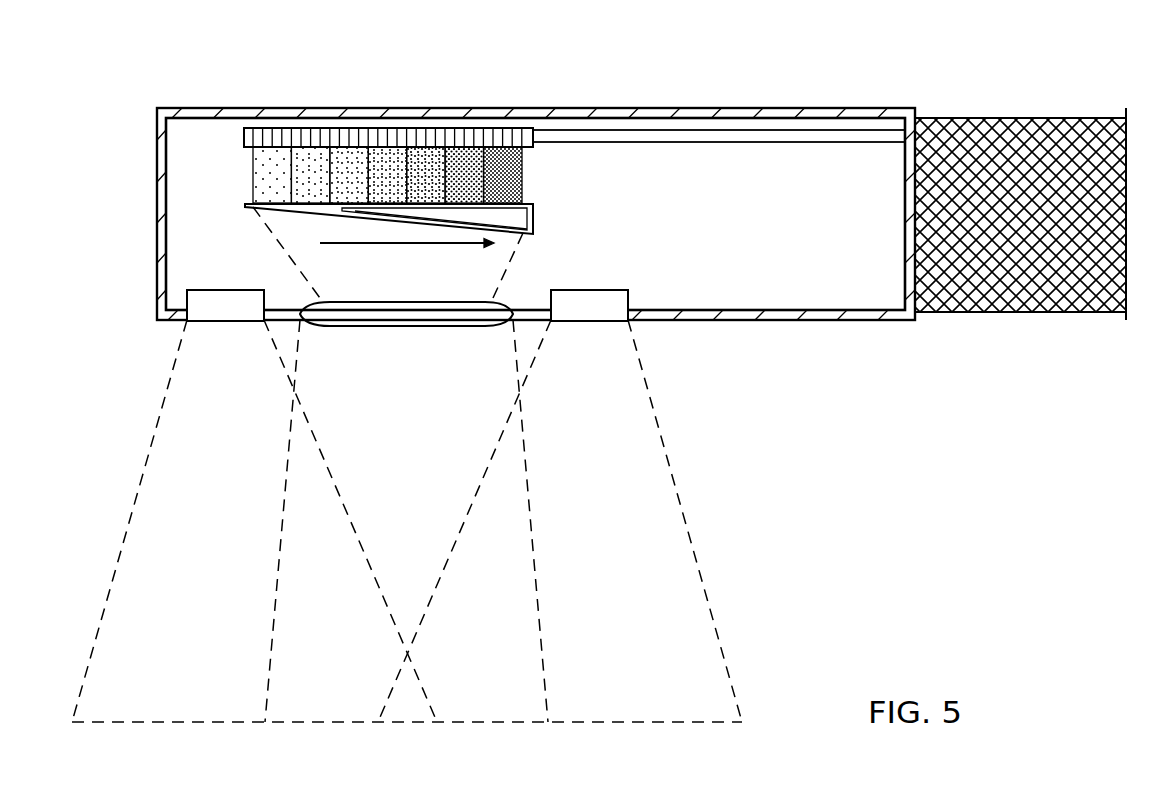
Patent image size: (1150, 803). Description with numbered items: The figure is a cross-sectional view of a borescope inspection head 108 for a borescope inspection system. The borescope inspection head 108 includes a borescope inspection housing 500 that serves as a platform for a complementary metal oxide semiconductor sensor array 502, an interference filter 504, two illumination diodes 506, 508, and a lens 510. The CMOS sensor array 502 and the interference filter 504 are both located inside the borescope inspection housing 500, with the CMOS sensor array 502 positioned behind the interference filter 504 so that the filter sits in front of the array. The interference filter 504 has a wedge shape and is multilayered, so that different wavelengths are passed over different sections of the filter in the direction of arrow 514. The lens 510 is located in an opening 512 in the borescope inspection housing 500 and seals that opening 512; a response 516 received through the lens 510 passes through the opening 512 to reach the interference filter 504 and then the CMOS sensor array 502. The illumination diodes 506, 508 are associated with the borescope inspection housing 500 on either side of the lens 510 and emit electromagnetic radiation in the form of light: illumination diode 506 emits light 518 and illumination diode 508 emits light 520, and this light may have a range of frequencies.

The borescope inspection head 108 is at (595, 383).
The borescope inspection housing 500 is at (535, 106).
The CMOS sensor array 502 is at (244, 136).
The interference filter 504 is at (535, 215).
The illumination diode 506 is at (222, 322).
The illumination diode 508 is at (590, 322).
The lens 510 is at (405, 328).
The opening 512 is at (284, 282).
The arrow 514 is at (398, 247).
The response 516 is at (292, 537).
The light 518 is at (128, 520).
The light 520 is at (686, 518).